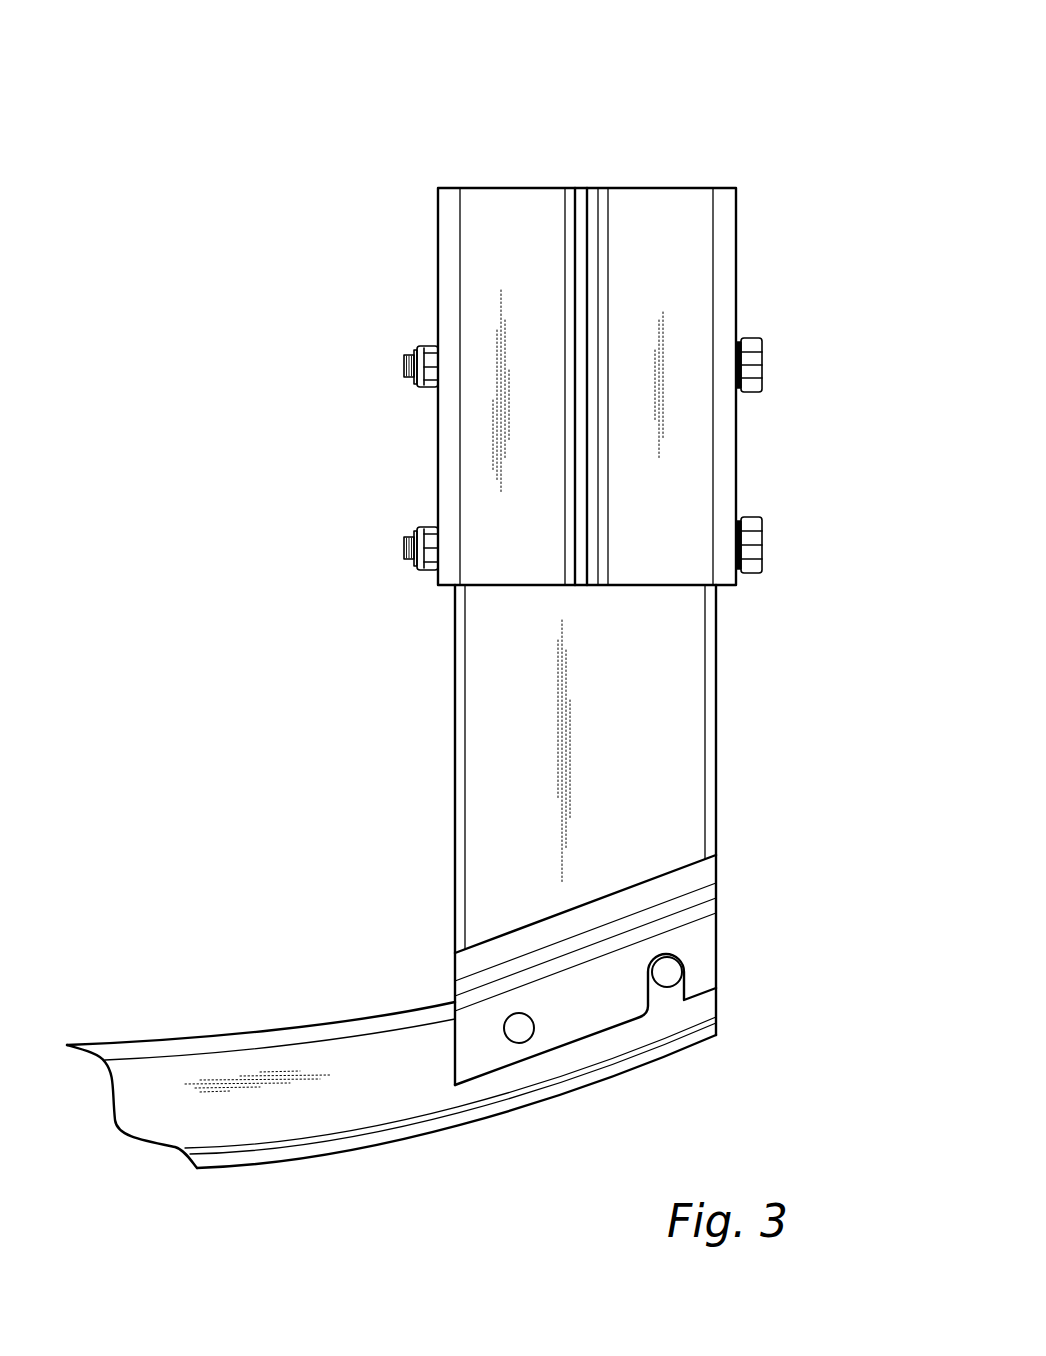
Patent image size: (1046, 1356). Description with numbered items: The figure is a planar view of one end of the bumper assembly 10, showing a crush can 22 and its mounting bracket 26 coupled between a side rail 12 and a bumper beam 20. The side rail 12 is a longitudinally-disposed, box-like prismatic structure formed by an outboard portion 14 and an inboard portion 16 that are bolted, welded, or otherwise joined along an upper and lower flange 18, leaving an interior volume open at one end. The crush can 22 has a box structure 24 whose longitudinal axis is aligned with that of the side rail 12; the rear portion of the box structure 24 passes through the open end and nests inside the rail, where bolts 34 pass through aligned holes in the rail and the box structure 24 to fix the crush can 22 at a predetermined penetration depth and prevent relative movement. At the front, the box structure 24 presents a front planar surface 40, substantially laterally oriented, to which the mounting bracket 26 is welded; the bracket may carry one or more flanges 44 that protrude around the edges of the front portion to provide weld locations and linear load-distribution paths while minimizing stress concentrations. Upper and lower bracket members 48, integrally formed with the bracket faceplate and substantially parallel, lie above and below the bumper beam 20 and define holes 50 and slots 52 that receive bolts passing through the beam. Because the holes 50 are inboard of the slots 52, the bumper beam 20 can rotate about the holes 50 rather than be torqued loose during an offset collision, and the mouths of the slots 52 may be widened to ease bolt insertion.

The bumper assembly 10 is at (698, 118).
The side rail 12 is at (738, 265).
The outboard portion 14 is at (738, 465).
The inboard portion 16 is at (438, 443).
The upper and lower flange 18 is at (583, 296).
The bumper beam 20 is at (295, 1153).
The crush can 22 is at (733, 655).
The box structure 24 is at (722, 780).
The mounting bracket 26 is at (729, 948).
The bolts 34 is at (752, 363).
The front planar surface 40 is at (553, 926).
The flange 44 is at (446, 967).
The upper and lower bracket members 48 is at (618, 1027).
The holes 50 is at (499, 1042).
The slots 52 is at (669, 1005).